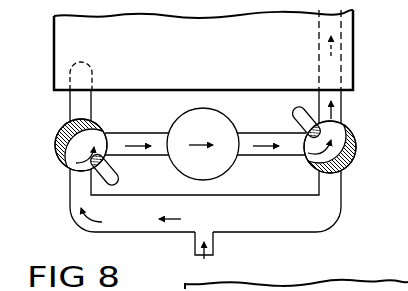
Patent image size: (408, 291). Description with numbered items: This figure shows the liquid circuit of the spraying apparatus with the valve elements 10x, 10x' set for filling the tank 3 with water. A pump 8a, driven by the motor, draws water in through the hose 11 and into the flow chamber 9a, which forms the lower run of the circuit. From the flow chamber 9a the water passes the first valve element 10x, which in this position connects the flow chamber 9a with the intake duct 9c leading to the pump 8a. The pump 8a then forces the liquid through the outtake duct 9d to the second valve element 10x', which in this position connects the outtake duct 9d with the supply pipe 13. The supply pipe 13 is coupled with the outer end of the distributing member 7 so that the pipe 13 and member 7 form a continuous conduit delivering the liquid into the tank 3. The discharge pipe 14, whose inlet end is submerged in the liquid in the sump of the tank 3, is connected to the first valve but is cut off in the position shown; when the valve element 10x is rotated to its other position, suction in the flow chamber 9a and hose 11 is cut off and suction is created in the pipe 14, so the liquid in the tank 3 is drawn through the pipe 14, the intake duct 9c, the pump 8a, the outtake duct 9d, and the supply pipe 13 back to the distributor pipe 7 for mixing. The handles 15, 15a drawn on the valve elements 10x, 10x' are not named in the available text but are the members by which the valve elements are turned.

The tank 3 is at (170, 33).
The distributing member 7 is at (337, 67).
The discharge pipe 14 is at (71, 105).
The supply pipe 13 is at (341, 112).
The flow chamber 9a is at (205, 200).
The intake duct 9c is at (124, 126).
The outtake duct 9d is at (246, 135).
The hose 11 is at (214, 248).
The pump 8a is at (262, 187).
The valve element 10x is at (70, 153).
The valve element 10x' is at (341, 151).
The valve handle 15 is at (120, 182).
The valve handle 15a is at (292, 103).